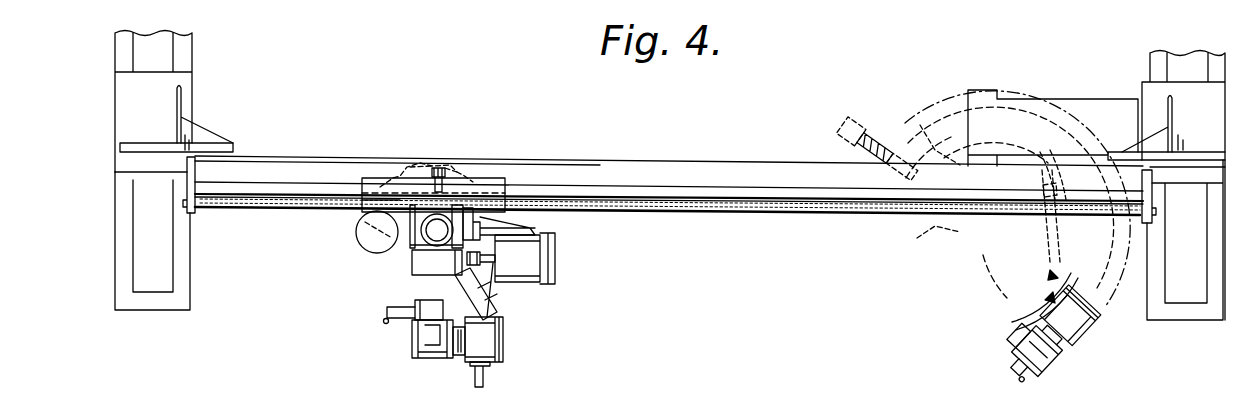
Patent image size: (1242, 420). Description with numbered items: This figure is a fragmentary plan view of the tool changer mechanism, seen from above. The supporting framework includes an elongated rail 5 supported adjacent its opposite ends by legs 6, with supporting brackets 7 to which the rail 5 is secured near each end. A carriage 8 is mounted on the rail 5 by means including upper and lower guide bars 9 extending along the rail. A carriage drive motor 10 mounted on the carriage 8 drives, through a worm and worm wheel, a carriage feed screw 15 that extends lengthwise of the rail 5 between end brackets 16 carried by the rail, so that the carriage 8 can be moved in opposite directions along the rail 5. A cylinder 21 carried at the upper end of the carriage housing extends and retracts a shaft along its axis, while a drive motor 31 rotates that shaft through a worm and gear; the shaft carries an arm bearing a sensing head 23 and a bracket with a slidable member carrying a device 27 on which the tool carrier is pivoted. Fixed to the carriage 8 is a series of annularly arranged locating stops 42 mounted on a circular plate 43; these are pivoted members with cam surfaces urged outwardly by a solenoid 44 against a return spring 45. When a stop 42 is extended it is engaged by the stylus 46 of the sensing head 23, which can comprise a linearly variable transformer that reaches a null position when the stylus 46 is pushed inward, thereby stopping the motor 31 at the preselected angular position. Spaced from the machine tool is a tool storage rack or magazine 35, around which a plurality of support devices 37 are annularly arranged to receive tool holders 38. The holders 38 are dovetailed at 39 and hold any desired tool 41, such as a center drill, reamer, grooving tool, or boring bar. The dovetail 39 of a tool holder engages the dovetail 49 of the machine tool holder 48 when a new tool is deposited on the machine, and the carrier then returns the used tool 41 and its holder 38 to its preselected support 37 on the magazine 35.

The rail 5 is at (662, 161).
The legs 6 is at (118, 237).
The supporting brackets 7 is at (133, 117).
The carriage 8 is at (505, 190).
The guide bars 9 is at (683, 198).
The carriage drive motor 10 is at (370, 237).
The carriage feed screw 15 is at (217, 216).
The end brackets 16 is at (190, 190).
The cylinder 21 is at (425, 236).
The sensing head 23 is at (497, 309).
The device 27 is at (493, 339).
The drive motor 31 is at (556, 258).
The tool storage rack or magazine 35 is at (1050, 277).
The support devices 37 is at (1065, 351).
The tool holders 38 is at (420, 361).
The dovetail 39 is at (432, 338).
The tool 41 is at (385, 320).
The locating stops 42 is at (443, 172).
The circular plate 43 is at (408, 178).
The solenoid 44 is at (467, 206).
The return spring 45 is at (437, 166).
The stylus 46 is at (493, 290).
The machine tool holder 48 is at (455, 364).
The dovetail 49 is at (450, 358).